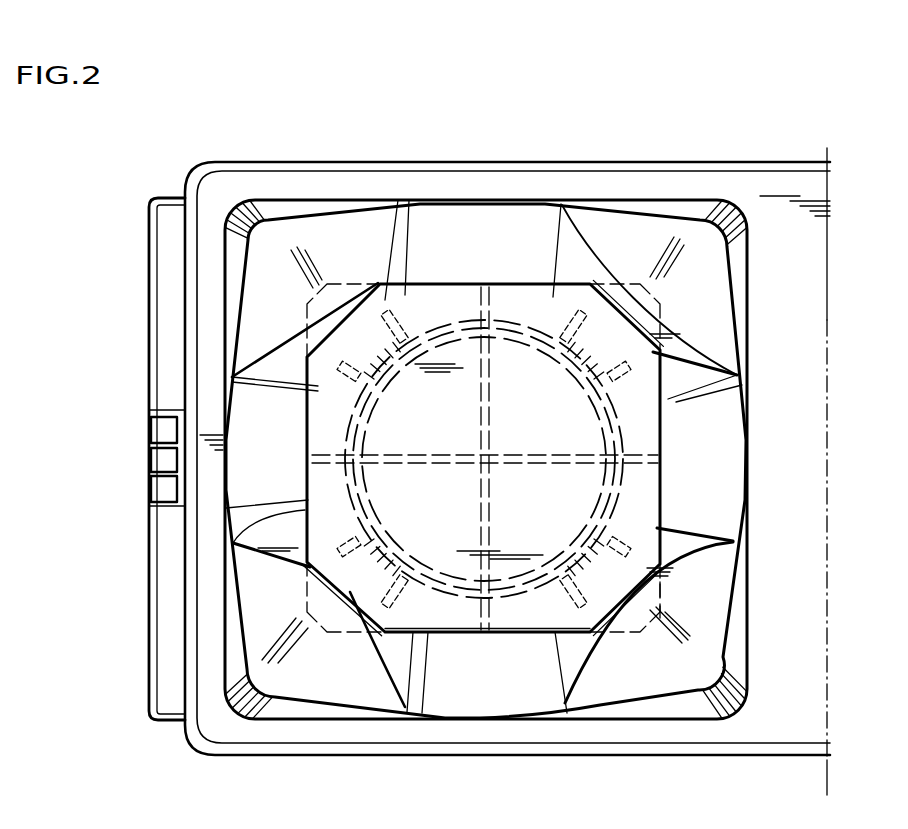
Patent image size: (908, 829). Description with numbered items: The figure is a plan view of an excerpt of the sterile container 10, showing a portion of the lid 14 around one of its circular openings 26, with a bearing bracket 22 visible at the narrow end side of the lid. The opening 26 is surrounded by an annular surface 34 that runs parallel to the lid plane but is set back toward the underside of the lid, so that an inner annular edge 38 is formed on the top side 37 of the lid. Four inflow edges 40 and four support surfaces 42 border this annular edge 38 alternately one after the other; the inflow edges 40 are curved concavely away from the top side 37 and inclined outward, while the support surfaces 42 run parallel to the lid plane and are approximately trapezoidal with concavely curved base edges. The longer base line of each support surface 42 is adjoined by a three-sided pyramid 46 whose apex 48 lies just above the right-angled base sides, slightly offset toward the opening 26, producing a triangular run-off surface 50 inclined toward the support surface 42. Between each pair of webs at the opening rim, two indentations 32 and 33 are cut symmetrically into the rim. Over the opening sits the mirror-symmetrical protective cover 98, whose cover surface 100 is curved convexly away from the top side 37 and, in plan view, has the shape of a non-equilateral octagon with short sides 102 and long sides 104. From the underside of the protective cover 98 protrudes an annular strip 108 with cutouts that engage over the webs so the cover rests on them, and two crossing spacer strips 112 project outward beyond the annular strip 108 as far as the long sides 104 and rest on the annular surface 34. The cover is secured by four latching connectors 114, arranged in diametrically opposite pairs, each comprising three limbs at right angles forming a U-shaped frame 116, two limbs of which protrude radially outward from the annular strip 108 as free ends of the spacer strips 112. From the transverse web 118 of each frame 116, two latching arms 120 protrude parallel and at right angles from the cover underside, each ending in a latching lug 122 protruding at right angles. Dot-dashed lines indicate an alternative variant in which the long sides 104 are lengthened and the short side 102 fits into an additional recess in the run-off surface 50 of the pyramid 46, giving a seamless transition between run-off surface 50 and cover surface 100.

The sterile container 10 is at (713, 142).
The lid 14 is at (596, 150).
The bearing bracket 22 is at (150, 432).
The circular opening 26 is at (508, 315).
The indentation 32 is at (383, 600).
The indentation 33 is at (352, 588).
The annular surface 34 is at (660, 509).
The top side of the lid 37 is at (776, 312).
The inner annular edge 38 is at (660, 303).
The inflow edge 40 is at (477, 228).
The support surface 42 is at (735, 543).
The three-sided pyramid 46 is at (297, 200).
The apex of the pyramid 48 is at (280, 212).
The run-off surface 50 is at (293, 245).
The protective cover 98 is at (748, 387).
The cover surface 100 is at (645, 490).
The short side 102 is at (618, 300).
The long side 104 is at (310, 514).
The annular strip 108 is at (505, 540).
The spacer strip 112 is at (459, 540).
The latching connector 114 is at (352, 387).
The U-shaped frame 116 is at (330, 350).
The transverse web 118 is at (398, 200).
The latching arm 120 is at (379, 282).
The latching lug 122 is at (377, 303).